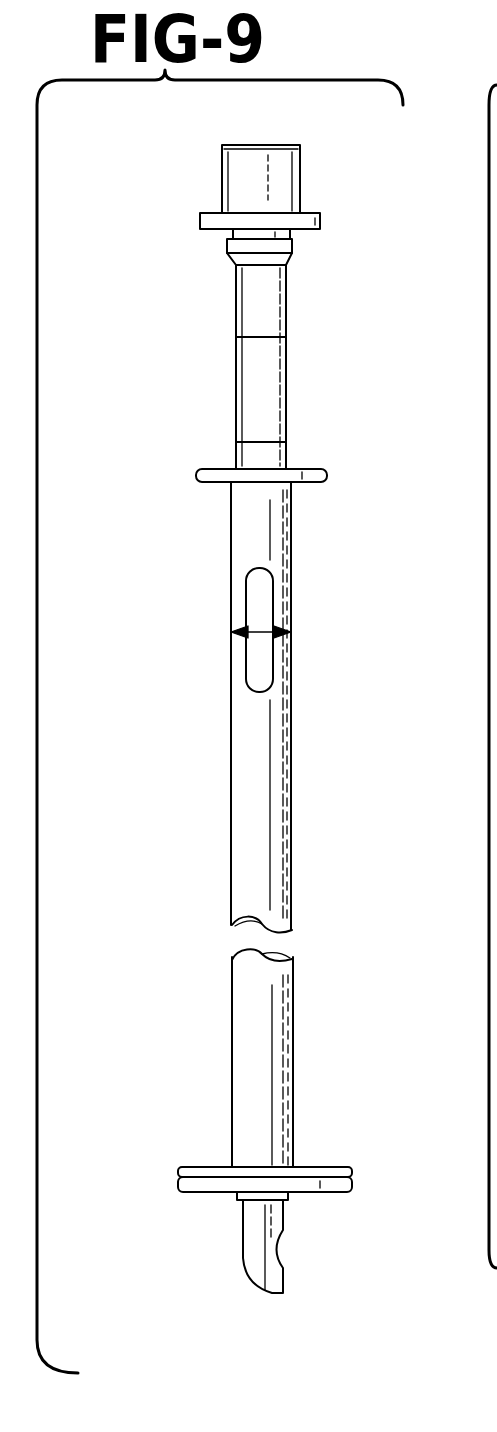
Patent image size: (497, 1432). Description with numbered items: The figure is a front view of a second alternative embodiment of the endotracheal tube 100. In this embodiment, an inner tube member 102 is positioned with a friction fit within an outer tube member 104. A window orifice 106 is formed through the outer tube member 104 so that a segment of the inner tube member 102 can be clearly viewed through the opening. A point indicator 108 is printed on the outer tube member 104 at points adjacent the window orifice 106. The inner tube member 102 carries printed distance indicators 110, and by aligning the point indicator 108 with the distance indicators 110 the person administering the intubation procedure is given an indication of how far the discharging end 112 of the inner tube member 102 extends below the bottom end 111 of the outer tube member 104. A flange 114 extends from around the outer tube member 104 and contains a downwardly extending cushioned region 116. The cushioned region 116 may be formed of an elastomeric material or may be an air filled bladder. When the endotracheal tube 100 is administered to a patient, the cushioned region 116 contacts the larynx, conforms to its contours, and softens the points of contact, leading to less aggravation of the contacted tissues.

The endotracheal tube 100 is at (148, 232).
The inner tube member 102 is at (286, 372).
The outer tube member 104 is at (247, 788).
The window orifice 106 is at (246, 598).
The point indicator 108 is at (291, 632).
The distance indicators 110 is at (236, 442).
The bottom end 111 is at (237, 1195).
The discharging end 112 is at (275, 1293).
The flange 114 is at (337, 1168).
The cushioned region 116 is at (315, 1192).